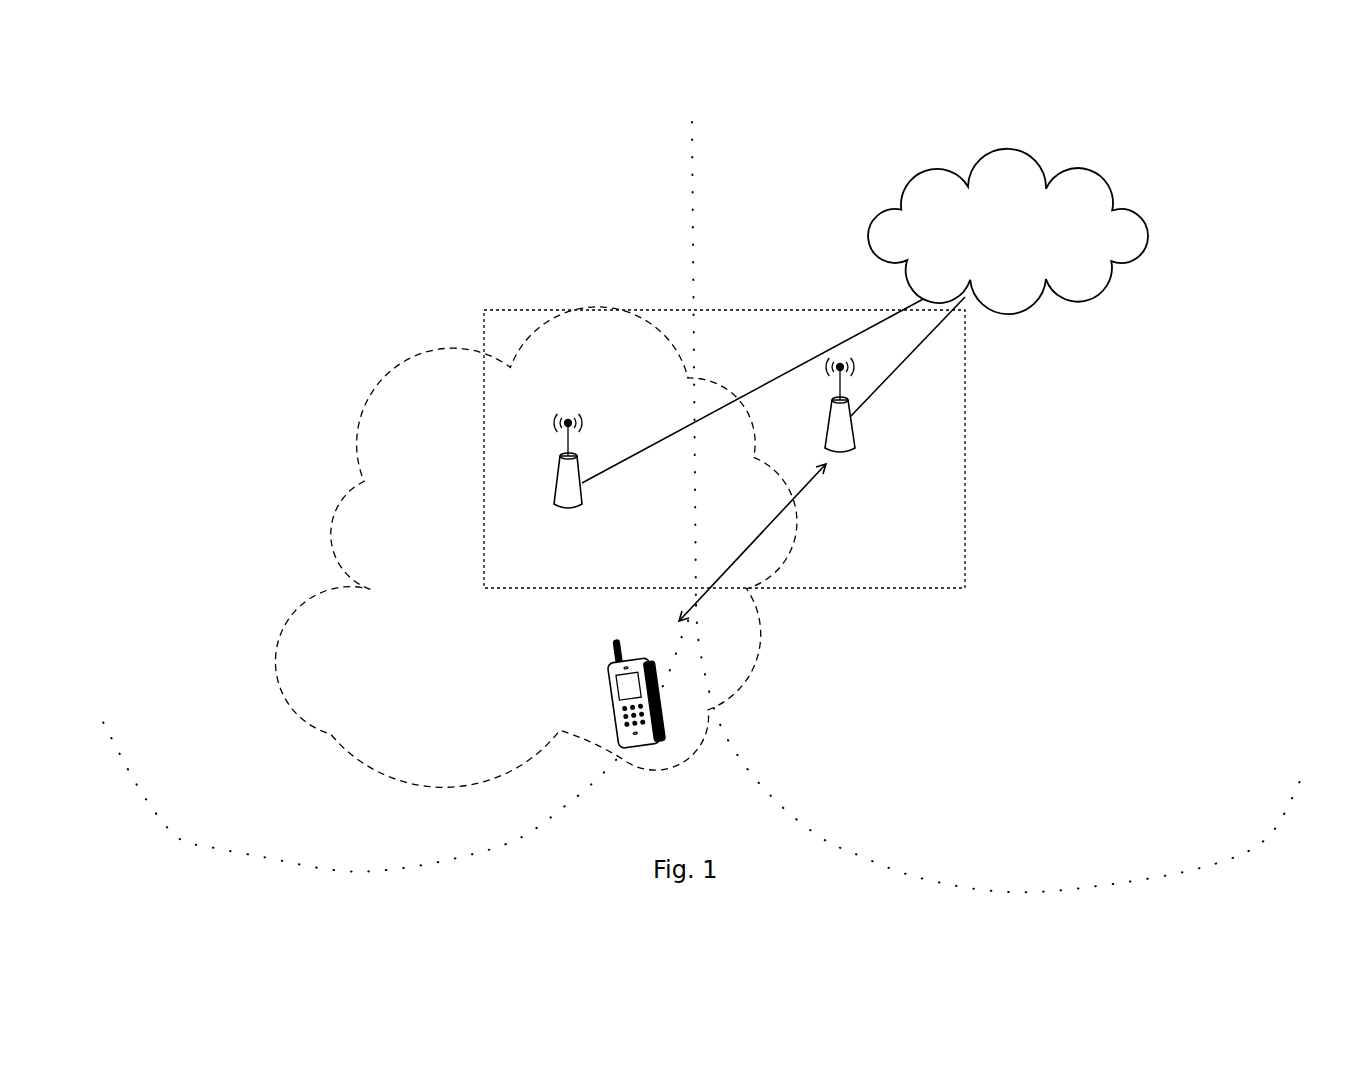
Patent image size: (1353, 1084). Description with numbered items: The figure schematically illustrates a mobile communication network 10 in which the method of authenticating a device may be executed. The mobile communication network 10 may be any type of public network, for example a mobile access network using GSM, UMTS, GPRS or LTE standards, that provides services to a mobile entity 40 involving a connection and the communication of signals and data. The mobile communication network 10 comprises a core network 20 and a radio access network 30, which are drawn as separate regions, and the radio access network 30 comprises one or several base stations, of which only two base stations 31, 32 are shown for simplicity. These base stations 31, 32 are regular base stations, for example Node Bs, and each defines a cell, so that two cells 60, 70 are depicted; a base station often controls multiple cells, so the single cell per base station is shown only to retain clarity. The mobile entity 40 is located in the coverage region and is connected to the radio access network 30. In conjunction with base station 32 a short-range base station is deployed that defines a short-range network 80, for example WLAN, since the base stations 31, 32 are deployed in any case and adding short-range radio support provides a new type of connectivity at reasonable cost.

The mobile communication network 10 is at (790, 223).
The core network 20 is at (917, 173).
The radio access network 30 is at (521, 337).
The base station 31 is at (855, 443).
The base station 32 is at (583, 487).
The mobile entity 40 is at (662, 698).
The cell 60 is at (193, 842).
The cell 70 is at (810, 828).
The short-range network 80 is at (295, 608).